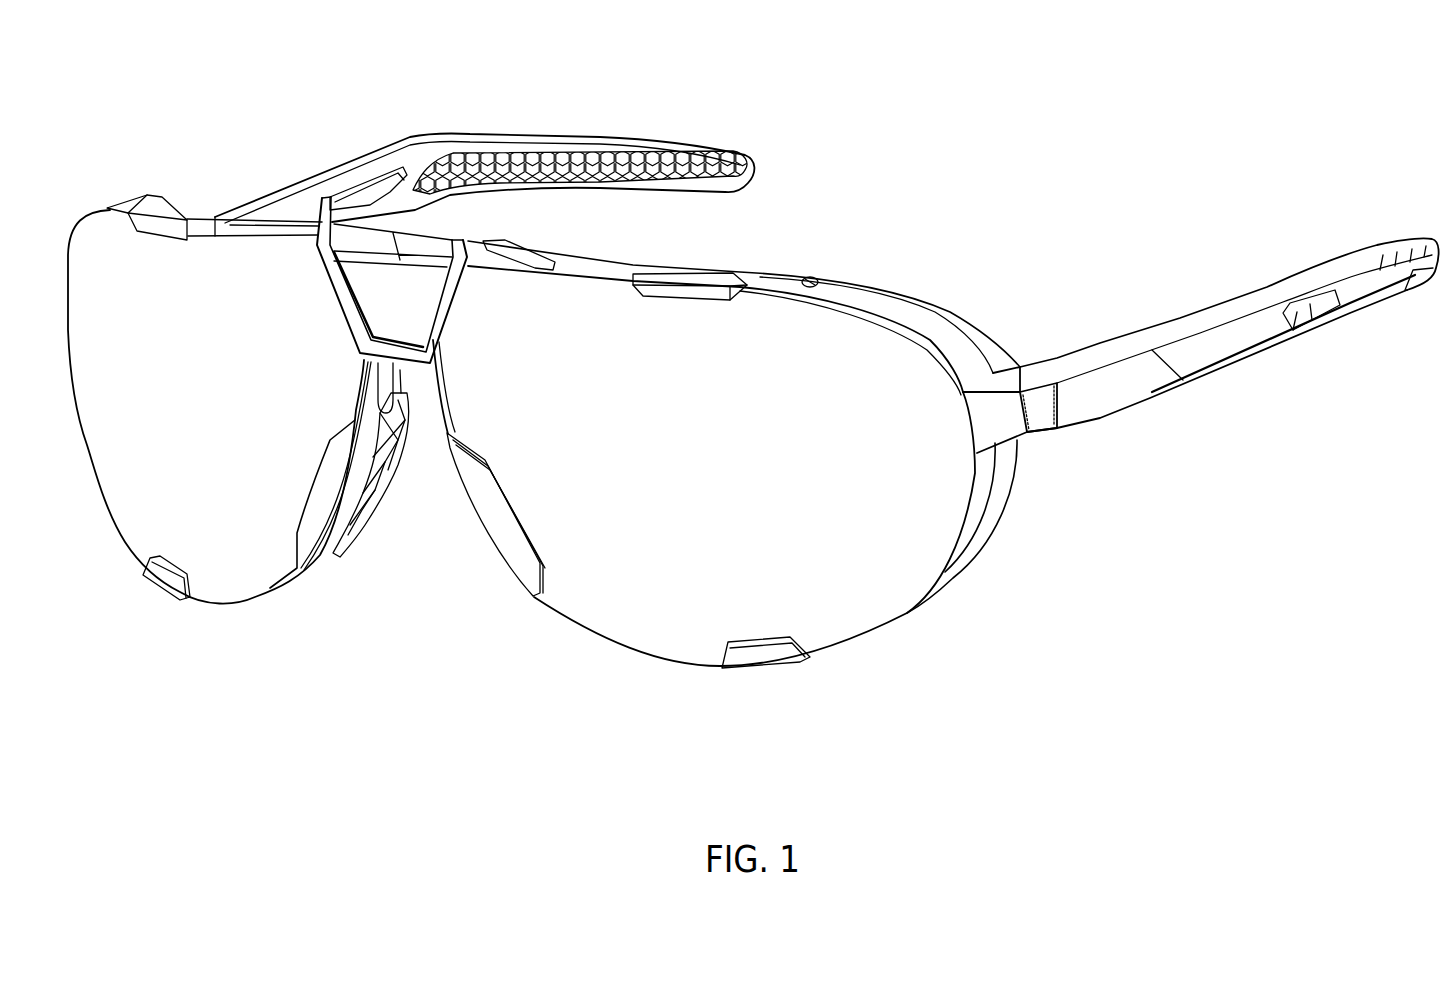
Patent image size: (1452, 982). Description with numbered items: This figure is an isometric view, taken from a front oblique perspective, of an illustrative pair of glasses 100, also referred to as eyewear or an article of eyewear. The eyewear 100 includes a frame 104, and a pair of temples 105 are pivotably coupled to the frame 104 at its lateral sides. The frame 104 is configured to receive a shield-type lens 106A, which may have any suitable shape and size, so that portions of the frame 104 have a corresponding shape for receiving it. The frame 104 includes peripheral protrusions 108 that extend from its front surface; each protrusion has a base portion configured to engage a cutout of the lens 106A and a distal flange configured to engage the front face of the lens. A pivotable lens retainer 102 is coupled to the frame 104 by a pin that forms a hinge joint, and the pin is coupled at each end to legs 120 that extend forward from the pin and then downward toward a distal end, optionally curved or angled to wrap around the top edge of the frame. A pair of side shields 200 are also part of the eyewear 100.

The glasses 100 is at (927, 89).
The lens retainer 102 is at (461, 319).
The frame 104 is at (196, 178).
The temples 105 is at (461, 142).
The shield-type lens 106A is at (232, 397).
The peripheral protrusions 108 is at (158, 240).
The legs 120 is at (331, 288).
The side shields 200 is at (978, 326).